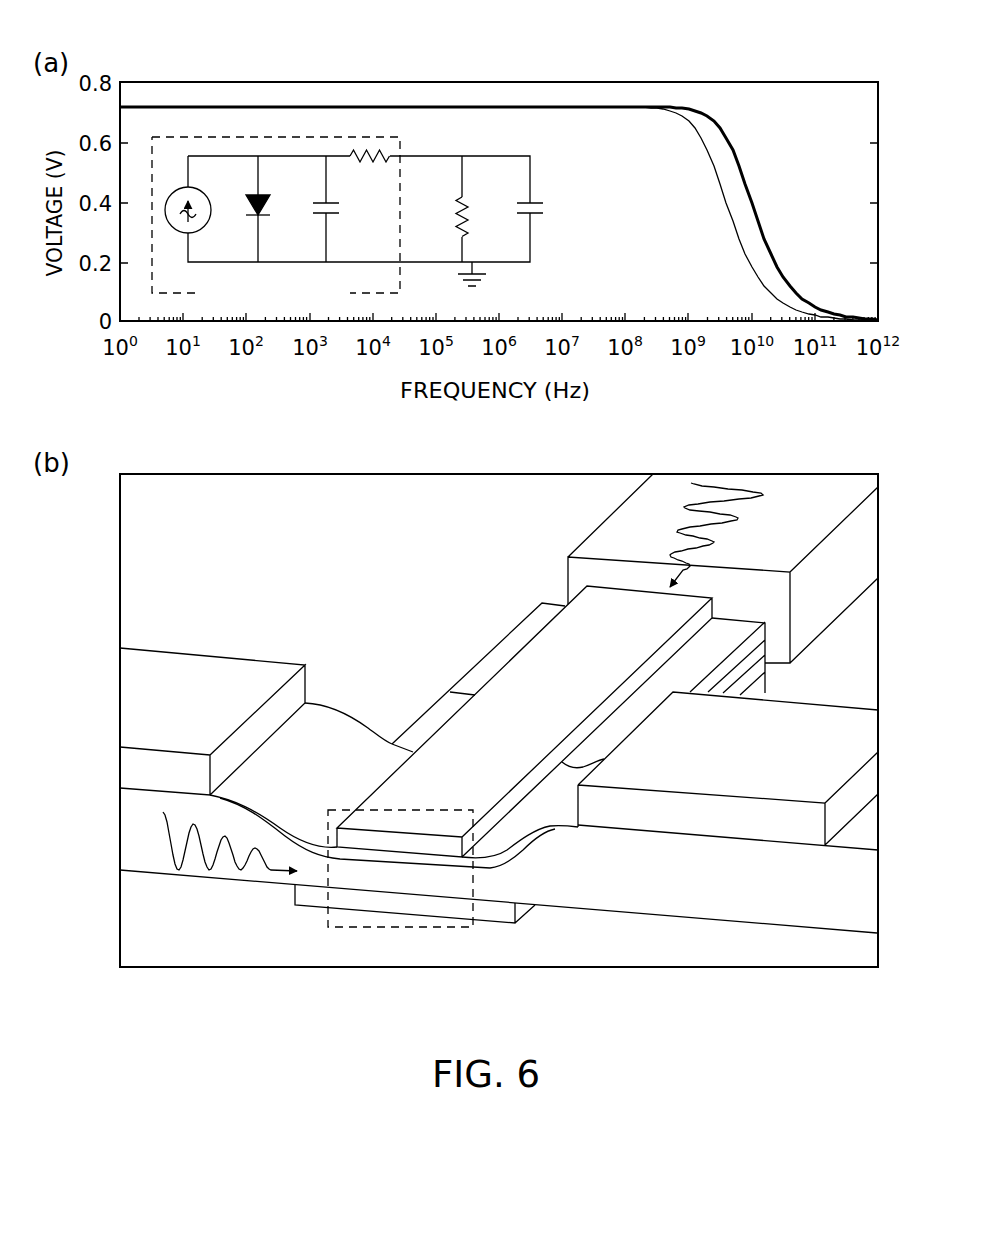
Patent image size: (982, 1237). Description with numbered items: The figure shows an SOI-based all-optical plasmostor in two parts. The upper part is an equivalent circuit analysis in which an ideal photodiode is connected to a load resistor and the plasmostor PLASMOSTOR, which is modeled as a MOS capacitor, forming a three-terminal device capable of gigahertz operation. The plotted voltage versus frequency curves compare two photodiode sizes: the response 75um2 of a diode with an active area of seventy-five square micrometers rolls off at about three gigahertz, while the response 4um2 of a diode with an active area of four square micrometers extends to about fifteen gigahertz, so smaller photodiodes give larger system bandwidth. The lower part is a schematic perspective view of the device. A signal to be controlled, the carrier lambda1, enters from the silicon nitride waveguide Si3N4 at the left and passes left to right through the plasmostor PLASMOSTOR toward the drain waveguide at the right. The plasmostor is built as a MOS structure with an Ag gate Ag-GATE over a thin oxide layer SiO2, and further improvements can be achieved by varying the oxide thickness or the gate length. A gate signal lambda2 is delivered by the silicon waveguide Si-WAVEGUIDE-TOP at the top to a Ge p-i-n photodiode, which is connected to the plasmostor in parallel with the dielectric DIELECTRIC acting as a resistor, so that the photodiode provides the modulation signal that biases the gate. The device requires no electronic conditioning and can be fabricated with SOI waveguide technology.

The 4 μm² photodiode response 4um2 is at (768, 211).
The 75 μm² photodiode response 75um2 is at (717, 248).
The Si3N4 waveguide Si3N4 is at (212, 721).
The dielectric DIELECTRIC is at (407, 720).
The Ag gate Ag-GATE is at (524, 721).
The silicon waveguide Si-WAVEGUIDE-TOP is at (557, 550).
The plasmostor PLASMOSTOR is at (347, 882).
The SiO2 oxide layer SiO2 is at (509, 863).
The optical carrier signal λ1 lambda1 is at (218, 841).
The gate signal λ2 lambda2 is at (730, 535).